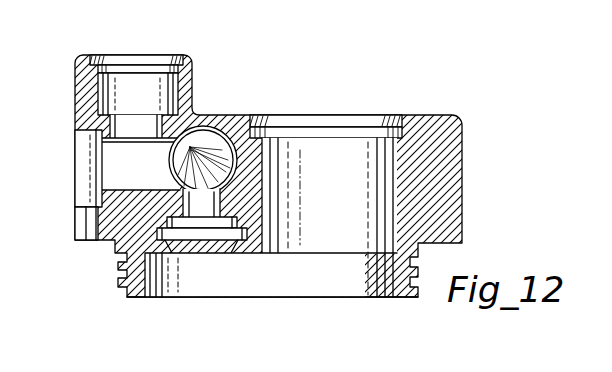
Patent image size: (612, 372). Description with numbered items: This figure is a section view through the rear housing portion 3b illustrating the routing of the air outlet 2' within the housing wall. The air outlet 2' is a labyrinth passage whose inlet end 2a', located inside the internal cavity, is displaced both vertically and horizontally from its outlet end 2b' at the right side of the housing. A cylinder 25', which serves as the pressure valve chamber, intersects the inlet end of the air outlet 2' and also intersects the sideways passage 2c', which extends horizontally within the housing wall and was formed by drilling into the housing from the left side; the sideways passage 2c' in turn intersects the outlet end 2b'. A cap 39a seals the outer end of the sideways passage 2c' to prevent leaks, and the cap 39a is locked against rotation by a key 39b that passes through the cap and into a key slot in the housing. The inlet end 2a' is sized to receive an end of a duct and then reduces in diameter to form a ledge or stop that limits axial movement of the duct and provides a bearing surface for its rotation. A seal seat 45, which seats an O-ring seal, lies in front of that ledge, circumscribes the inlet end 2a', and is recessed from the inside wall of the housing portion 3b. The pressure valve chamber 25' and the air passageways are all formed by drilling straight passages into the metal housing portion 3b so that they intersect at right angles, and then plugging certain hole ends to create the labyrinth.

The air outlet 2' is at (268, 153).
The inlet end of air outlet 2a' is at (272, 292).
The outlet end of air outlet 2b' is at (136, 47).
The sideways passage 2c' is at (141, 164).
The rear housing portion 3b is at (294, 111).
The cylinder 25' is at (206, 136).
The cap 39a is at (80, 170).
The key 39b is at (92, 242).
The seal seat 45 is at (243, 232).